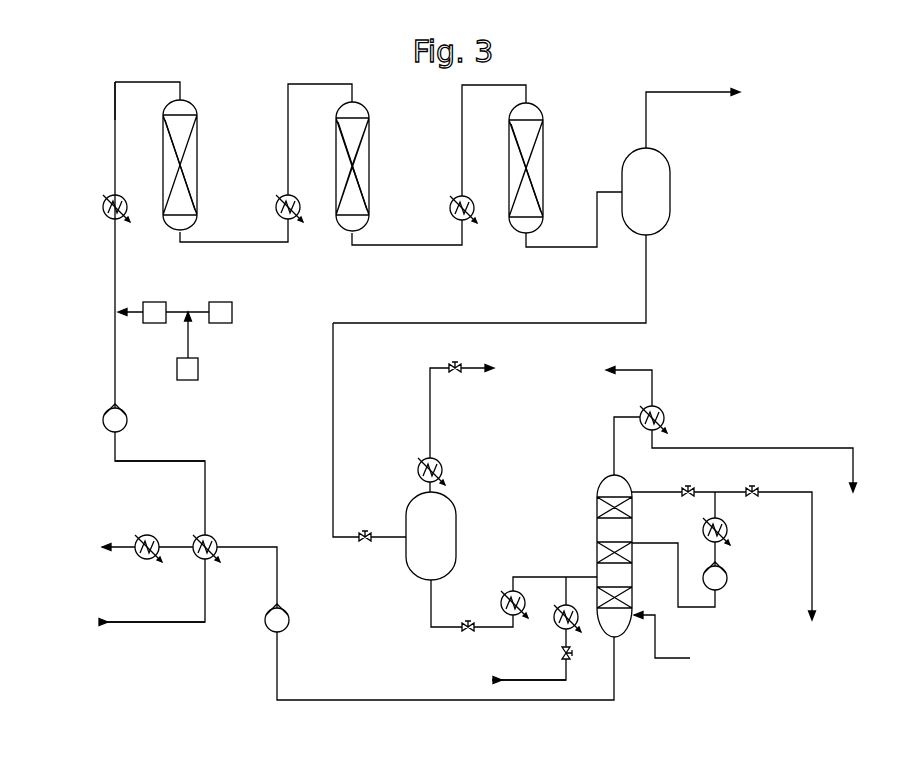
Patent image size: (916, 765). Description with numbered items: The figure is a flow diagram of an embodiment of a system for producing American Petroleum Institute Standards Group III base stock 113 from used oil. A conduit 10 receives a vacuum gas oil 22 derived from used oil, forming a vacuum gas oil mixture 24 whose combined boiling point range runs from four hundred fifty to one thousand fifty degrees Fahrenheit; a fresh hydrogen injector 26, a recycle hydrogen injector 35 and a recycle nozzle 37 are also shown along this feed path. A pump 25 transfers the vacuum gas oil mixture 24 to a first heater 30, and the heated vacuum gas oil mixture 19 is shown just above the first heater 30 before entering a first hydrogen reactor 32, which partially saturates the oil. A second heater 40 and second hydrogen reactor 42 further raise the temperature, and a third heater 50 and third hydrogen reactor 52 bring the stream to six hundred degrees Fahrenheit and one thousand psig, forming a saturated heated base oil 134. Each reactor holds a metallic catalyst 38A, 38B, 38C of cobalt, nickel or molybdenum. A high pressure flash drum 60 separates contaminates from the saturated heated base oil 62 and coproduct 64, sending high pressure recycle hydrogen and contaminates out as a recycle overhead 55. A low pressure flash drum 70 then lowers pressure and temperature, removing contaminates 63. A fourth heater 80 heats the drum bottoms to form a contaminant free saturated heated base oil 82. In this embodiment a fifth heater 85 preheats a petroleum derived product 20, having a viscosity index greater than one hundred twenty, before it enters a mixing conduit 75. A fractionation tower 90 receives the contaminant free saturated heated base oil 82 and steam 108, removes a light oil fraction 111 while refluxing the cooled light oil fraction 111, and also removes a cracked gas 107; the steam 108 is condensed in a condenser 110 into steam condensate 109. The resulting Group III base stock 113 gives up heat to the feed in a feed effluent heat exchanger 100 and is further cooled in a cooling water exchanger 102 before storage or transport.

The conduit 10 is at (115, 333).
The heated vacuum gas oil mixture 19 is at (115, 118).
The petroleum derived product 20 is at (510, 677).
The vacuum gas oil 22 is at (134, 621).
The vacuum gas oil mixture 24 is at (185, 461).
The pump 25 is at (103, 418).
The fresh hydrogen injector 26 is at (202, 373).
The first heater 30 is at (103, 207).
The first hydrogen reactor 32 is at (197, 132).
The recycle hydrogen injector 35 is at (222, 302).
The recycle nozzle 37 is at (155, 302).
The metallic catalyst 38A is at (180, 166).
The metallic catalyst 38B is at (352, 168).
The metallic catalyst 38C is at (526, 170).
The second heater 40 is at (276, 207).
The second hydrogen reactor 42 is at (369, 135).
The third heater 50 is at (448, 208).
The third hydrogen reactor 52 is at (543, 135).
The recycle overhead 55 is at (716, 116).
The high pressure flash drum 60 is at (670, 194).
The saturated heated base oil 62 is at (493, 322).
The contaminates 63 is at (471, 426).
The coproduct 64 is at (452, 322).
The low pressure flash drum 70 is at (456, 537).
The mixing conduit 75 is at (447, 628).
The fourth heater 80 is at (500, 603).
The contaminant free saturated heated base oil 82 is at (563, 577).
The fifth heater 85 is at (558, 630).
The fractionation tower 90 is at (597, 543).
The feed effluent heat exchanger 100 is at (215, 537).
The cooling water exchanger 102 is at (147, 560).
The cracked gas 107 is at (610, 418).
The steam 108 is at (682, 641).
The steam condensate 109 is at (763, 477).
The condenser 110 is at (668, 425).
The light oil fraction 111 is at (643, 543).
The American Petroleum Institute Standards Group III base stock 113 is at (460, 718).
The saturated heated base oil 134 is at (275, 243).